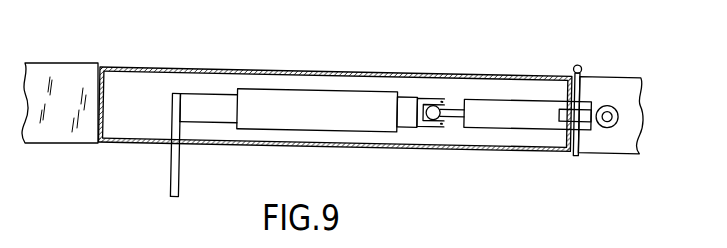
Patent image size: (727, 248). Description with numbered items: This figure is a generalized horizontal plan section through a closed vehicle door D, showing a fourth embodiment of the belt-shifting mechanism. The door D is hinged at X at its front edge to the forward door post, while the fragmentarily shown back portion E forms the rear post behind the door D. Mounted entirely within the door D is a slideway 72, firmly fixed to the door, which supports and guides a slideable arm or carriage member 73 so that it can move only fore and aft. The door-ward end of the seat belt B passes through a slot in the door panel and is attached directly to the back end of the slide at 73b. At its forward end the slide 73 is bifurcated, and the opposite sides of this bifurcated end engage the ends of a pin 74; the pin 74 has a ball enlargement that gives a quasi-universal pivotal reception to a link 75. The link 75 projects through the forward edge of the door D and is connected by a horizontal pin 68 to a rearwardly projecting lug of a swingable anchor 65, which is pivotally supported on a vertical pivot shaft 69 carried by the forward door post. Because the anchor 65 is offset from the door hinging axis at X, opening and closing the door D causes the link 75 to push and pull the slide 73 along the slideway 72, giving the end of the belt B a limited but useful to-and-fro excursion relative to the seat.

The back portion E is at (77, 59).
The door D is at (141, 153).
The seat belt B is at (182, 178).
The door hinge X is at (580, 66).
The slide back end 73b is at (180, 92).
The slide member 73 is at (212, 100).
The slideway 72 is at (327, 88).
The pin 74 is at (440, 132).
The link 75 is at (520, 130).
The horizontal pin 68 is at (580, 148).
The vertical pivot shaft 69 is at (617, 118).
The swingable anchor 65 is at (612, 128).